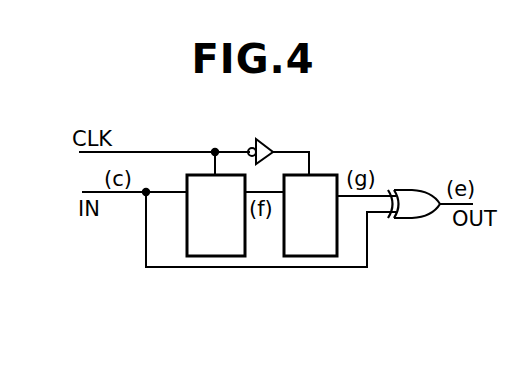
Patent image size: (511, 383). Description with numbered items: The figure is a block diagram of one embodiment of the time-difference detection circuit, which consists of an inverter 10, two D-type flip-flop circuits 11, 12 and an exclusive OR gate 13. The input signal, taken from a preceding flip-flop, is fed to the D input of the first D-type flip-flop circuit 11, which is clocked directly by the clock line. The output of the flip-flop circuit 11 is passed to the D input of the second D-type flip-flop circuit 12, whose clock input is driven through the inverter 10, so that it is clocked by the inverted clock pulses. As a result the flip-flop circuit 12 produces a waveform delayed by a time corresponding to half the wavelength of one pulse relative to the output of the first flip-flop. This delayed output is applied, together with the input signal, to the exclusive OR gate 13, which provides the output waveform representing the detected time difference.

The inverter 10 is at (270, 142).
The D-type flip-flop circuit 11 is at (187, 222).
The D-type flip-flop circuit 12 is at (320, 257).
The exclusive OR gate 13 is at (415, 218).